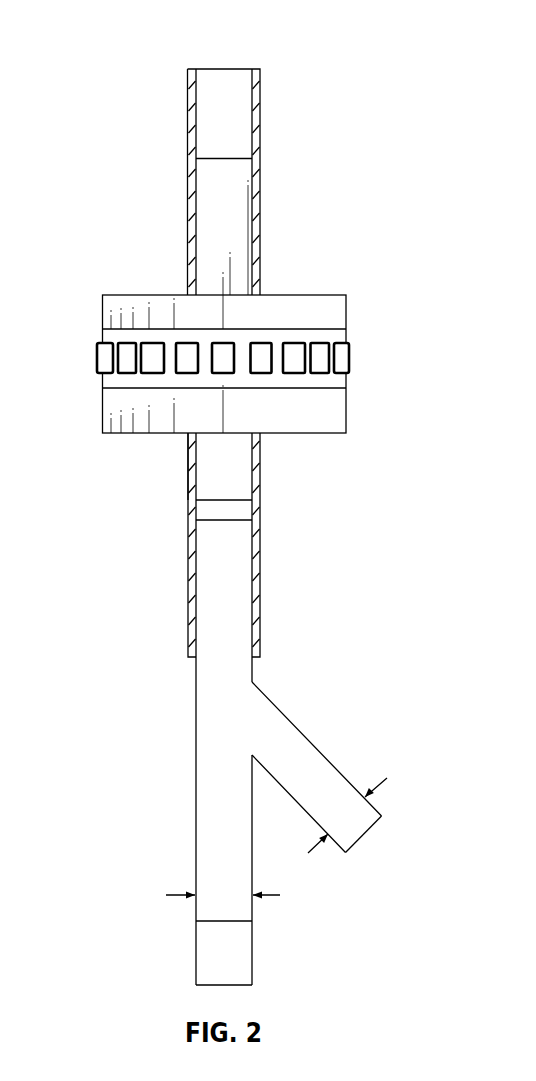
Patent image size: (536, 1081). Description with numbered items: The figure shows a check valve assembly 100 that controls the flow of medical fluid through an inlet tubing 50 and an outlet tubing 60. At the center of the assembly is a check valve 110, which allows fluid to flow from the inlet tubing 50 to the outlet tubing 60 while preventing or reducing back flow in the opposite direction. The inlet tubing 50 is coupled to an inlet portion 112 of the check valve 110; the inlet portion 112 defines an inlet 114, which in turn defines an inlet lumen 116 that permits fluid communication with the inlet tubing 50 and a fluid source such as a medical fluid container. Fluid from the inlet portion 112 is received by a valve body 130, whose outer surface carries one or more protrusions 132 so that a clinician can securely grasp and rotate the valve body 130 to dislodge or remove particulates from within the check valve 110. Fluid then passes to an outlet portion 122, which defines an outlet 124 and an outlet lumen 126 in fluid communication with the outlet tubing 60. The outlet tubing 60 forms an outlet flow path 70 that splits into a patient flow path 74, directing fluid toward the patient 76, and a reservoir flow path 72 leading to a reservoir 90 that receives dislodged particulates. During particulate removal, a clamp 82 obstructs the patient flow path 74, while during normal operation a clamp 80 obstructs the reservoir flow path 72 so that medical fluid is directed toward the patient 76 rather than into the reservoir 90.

The check valve assembly 100 is at (388, 40).
The inlet tubing 50 is at (262, 107).
The inlet lumen 116 is at (233, 172).
The inlet 114 is at (203, 205).
The inlet portion 112 is at (145, 298).
The check valve 110 is at (362, 261).
The valve body 130 is at (337, 337).
The protrusions 132 is at (105, 358).
The outlet portion 122 is at (117, 410).
The outlet lumen 126 is at (190, 477).
The outlet 124 is at (233, 485).
The outlet tubing 60 is at (263, 562).
The outlet flow path 70 is at (217, 597).
The reservoir flow path 72 is at (212, 800).
The patient flow path 74 is at (297, 758).
The patient 76 is at (365, 835).
The clamp 82 is at (373, 797).
The clamp 80 is at (190, 894).
The reservoir 90 is at (210, 955).